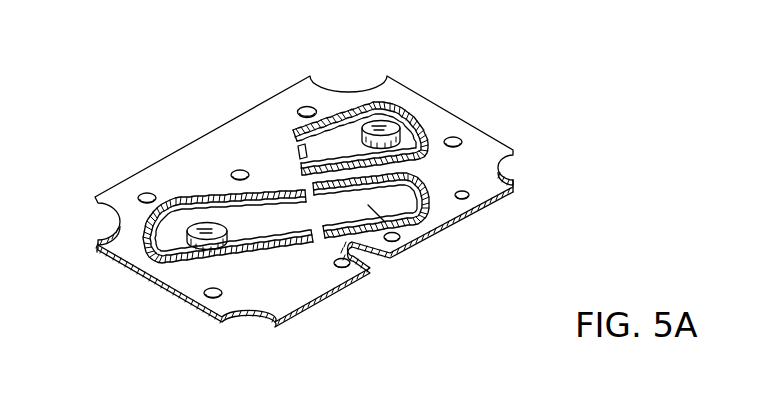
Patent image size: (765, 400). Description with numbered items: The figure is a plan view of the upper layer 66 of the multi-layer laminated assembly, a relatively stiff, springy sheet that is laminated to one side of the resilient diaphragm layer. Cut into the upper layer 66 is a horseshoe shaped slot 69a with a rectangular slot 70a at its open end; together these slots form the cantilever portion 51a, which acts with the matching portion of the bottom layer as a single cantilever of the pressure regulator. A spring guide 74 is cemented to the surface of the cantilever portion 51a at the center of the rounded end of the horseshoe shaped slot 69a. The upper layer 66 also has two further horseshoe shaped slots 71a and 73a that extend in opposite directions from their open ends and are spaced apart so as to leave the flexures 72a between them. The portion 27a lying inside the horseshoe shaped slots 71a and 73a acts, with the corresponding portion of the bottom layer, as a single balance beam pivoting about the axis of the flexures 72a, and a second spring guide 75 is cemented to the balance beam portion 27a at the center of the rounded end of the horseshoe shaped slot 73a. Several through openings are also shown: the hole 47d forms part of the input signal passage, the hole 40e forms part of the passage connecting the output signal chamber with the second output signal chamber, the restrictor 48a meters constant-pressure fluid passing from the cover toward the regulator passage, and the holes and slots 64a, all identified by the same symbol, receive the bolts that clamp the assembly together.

The portion of balance beam 27a is at (253, 234).
The upper layer 66 is at (100, 248).
The horseshoe shaped slot 69a is at (383, 103).
The cantilever portion 51a is at (341, 136).
The flexures 72a is at (307, 237).
The horseshoe shaped slot 73a is at (250, 272).
The horseshoe shaped slot 71a is at (415, 208).
The rectangular slot 70a is at (295, 157).
The spring guide 74 is at (392, 133).
The spring guide 75 is at (188, 244).
The holes and slots 64a is at (207, 296).
The restrictor 48a is at (469, 197).
The hole 47d is at (347, 266).
The hole 40e is at (396, 241).